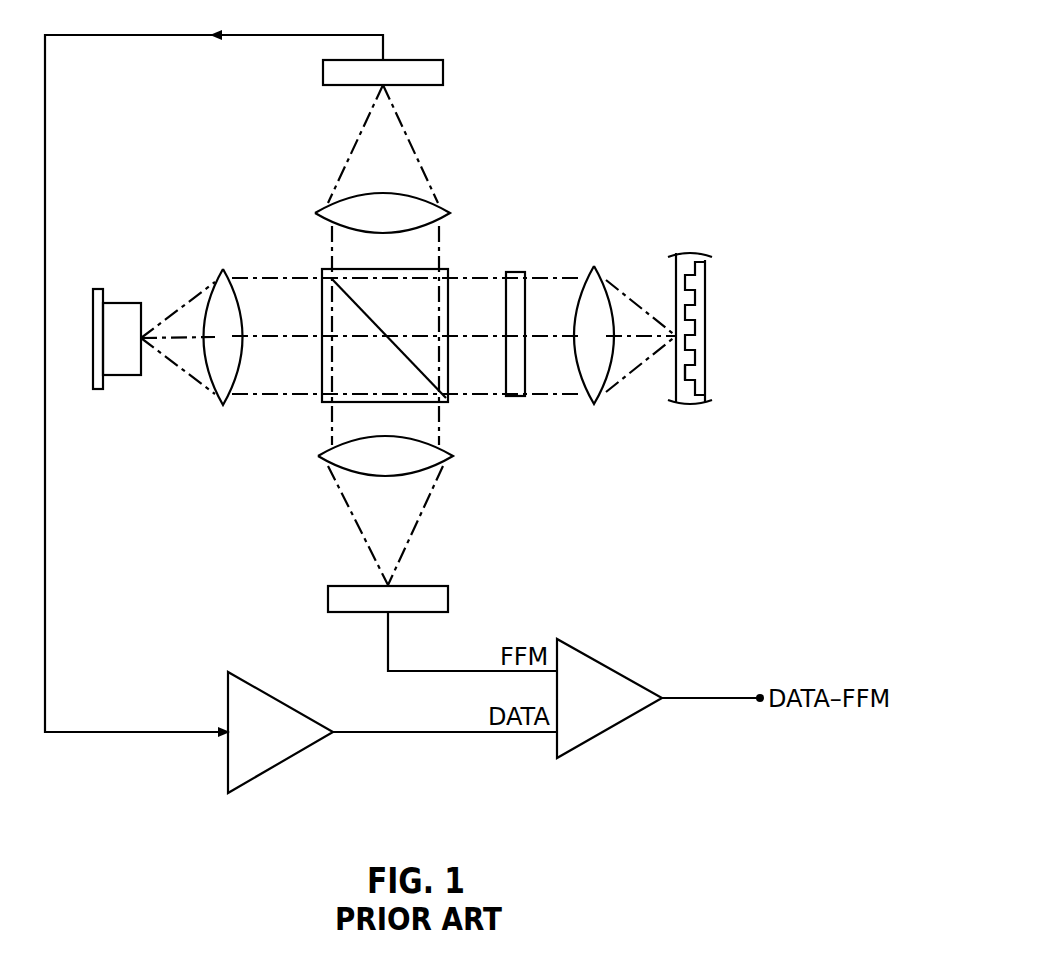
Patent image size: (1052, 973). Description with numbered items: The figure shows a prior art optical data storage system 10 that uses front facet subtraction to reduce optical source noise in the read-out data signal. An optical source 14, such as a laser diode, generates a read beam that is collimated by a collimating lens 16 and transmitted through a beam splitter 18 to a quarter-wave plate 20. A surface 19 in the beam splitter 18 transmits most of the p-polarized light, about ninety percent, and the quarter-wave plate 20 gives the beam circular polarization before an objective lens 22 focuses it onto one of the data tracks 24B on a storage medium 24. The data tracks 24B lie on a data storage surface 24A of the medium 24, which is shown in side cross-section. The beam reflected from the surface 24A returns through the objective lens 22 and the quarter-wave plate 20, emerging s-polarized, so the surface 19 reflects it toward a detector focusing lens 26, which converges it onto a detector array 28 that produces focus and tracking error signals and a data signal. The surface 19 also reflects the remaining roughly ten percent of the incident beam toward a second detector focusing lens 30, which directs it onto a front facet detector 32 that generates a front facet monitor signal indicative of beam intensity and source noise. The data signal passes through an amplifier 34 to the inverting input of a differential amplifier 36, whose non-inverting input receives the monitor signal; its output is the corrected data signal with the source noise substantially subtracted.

The optical system 10 is at (620, 40).
The optical source 14 is at (125, 303).
The collimating lens 16 is at (215, 394).
The beam splitter 18 is at (322, 318).
The surface 19 is at (410, 358).
The quarter-wave plate 20 is at (515, 272).
The objective lens 22 is at (575, 330).
The storage medium 24 is at (696, 313).
The data storage surface 24A is at (698, 334).
The data tracks 24B is at (686, 381).
The detector focusing lens 26 is at (316, 212).
The detector array 28 is at (323, 72).
The detector focusing lens 30 is at (324, 460).
The detector 32 is at (328, 600).
The amplifier 34 is at (277, 768).
The differential amplifier 36 is at (595, 660).